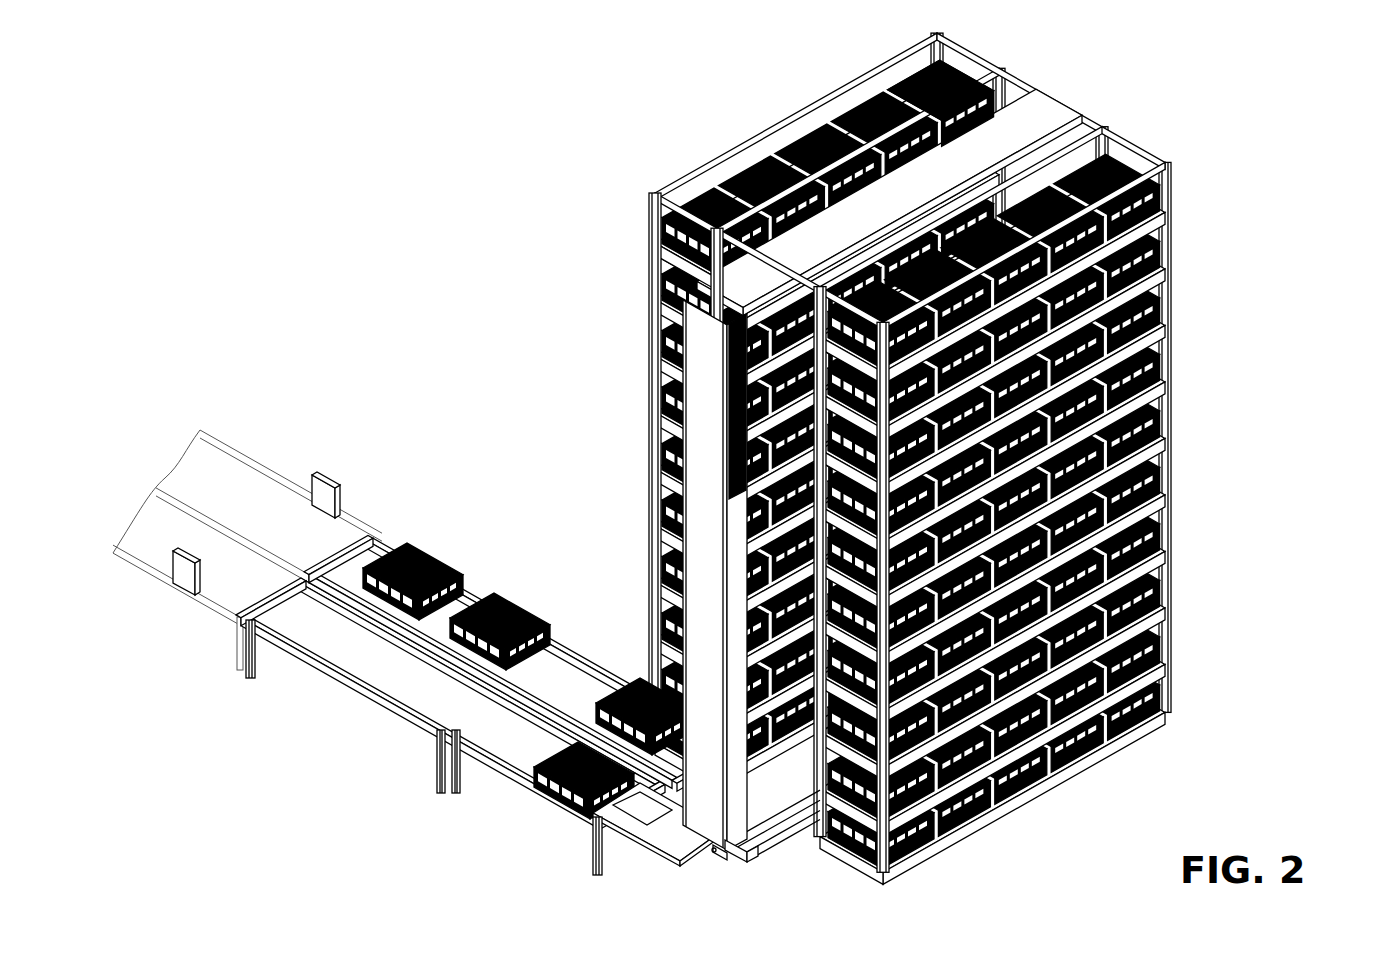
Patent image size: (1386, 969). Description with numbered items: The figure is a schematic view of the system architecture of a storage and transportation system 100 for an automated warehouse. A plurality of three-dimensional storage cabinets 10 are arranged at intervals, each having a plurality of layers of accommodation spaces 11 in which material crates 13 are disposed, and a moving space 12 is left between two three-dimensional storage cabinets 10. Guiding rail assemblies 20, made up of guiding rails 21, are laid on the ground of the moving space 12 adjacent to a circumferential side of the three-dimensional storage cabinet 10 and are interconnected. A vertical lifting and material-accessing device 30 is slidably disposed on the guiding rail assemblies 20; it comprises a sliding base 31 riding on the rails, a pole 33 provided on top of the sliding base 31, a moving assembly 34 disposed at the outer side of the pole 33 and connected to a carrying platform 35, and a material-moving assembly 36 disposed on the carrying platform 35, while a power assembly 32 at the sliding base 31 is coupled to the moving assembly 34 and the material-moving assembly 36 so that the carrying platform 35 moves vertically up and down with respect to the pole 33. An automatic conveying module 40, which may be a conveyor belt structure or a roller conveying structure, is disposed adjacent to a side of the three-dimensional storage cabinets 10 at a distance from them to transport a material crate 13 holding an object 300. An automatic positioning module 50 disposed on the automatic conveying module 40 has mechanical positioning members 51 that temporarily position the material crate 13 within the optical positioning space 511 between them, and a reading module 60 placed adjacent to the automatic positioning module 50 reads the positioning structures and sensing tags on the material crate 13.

The storage and transportation system 100 is at (737, 476).
The three-dimensional storage cabinet 10 is at (906, 458).
The accommodation space 11 is at (668, 270).
The moving space 12 is at (1073, 140).
The material crate 13 is at (907, 85).
The guiding rail assembly 20 is at (800, 822).
The guiding rail 21 is at (760, 835).
The vertical lifting and material-accessing device 30 is at (656, 610).
The sliding base 31 is at (734, 850).
The power assembly 32 is at (748, 845).
The pole 33 is at (717, 853).
The moving assembly 34 is at (720, 833).
The carrying platform 35 is at (640, 833).
The material-moving assembly 36 is at (633, 803).
The automatic conveying module 40 is at (318, 660).
The automatic positioning module 50 is at (279, 498).
The mechanical positioning member 51 is at (265, 537).
The optical positioning space 511 is at (293, 530).
The reading module 60 is at (323, 470).
The object 300 is at (422, 553).